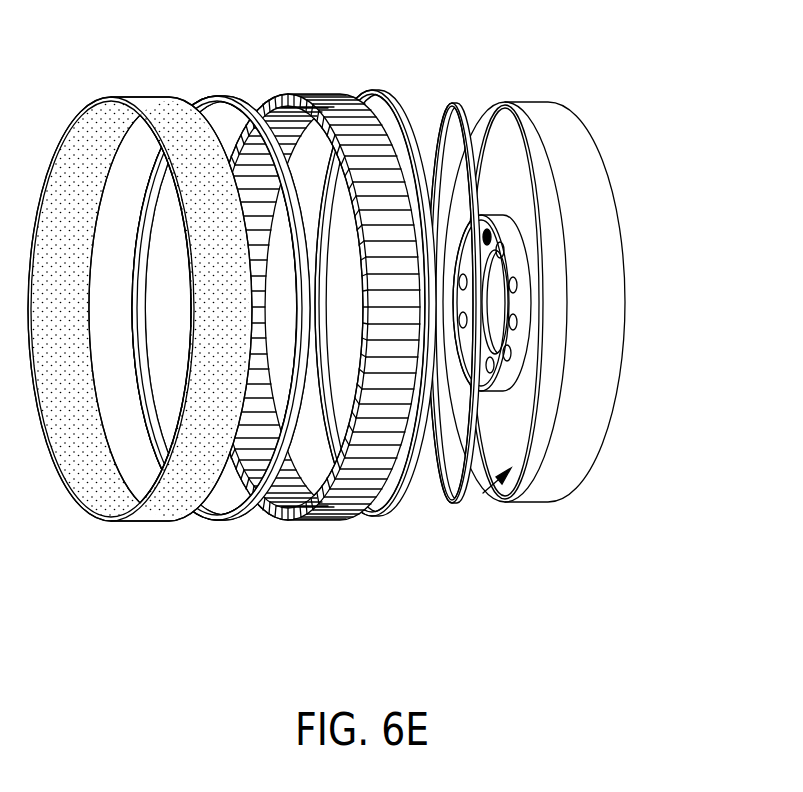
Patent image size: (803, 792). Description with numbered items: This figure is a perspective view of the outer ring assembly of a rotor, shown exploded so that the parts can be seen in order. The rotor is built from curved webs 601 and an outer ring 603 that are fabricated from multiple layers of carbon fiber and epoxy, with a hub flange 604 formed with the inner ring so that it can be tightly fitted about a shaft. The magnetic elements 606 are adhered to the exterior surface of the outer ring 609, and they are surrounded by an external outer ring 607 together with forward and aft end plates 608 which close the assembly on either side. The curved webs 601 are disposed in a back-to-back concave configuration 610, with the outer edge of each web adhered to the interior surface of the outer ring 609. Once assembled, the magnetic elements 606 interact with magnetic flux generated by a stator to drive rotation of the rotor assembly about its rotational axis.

The curved webs 601 is at (552, 311).
The outer ring 603 is at (513, 230).
The hub flange 604 is at (430, 103).
The magnetic elements 606 is at (306, 514).
The external outer ring 607 is at (88, 102).
The forward and aft end plates 608 is at (202, 95).
The outer ring 609 is at (577, 477).
The back-to-back concave configuration 610 is at (483, 493).